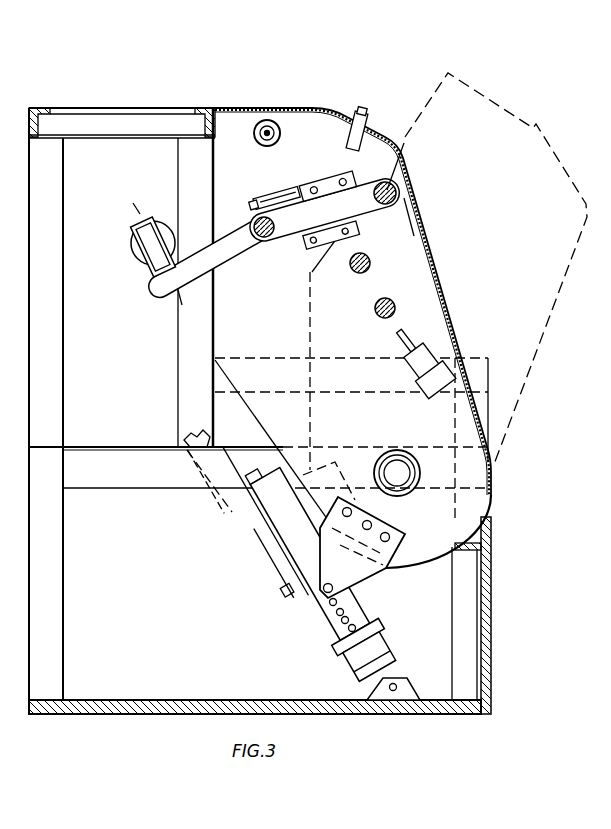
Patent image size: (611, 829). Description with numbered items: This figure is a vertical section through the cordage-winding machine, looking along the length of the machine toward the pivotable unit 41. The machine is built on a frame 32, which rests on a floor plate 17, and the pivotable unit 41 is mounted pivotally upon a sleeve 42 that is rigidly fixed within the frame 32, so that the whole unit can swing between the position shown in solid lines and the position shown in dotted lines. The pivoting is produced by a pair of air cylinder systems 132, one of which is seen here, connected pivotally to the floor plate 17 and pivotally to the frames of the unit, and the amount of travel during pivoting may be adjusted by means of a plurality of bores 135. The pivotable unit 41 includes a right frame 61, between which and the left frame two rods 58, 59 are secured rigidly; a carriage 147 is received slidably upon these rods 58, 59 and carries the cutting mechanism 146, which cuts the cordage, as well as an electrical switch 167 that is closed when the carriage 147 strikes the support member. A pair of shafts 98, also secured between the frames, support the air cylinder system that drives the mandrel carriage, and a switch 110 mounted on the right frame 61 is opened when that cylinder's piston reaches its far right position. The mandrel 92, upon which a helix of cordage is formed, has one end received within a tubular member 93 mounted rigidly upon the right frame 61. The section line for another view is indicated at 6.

The section line 6- 6 is at (140, 206).
The floor plate 17 is at (137, 700).
The frame 32 is at (493, 635).
The pivotable unit 41 is at (436, 250).
The sleeve 42 is at (418, 458).
The rod 58 is at (270, 237).
The rod 59 is at (398, 186).
The right frame 61 is at (410, 228).
The mandrel 92 is at (281, 126).
The tubular member 93 is at (268, 126).
The shaft 98 is at (370, 262).
The switch 110 is at (428, 374).
The air cylinder system 132 is at (372, 606).
The bore 135 is at (348, 629).
The cutting mechanism 146 is at (168, 226).
The carriage 147 is at (226, 234).
The electrical switch 167 is at (290, 184).